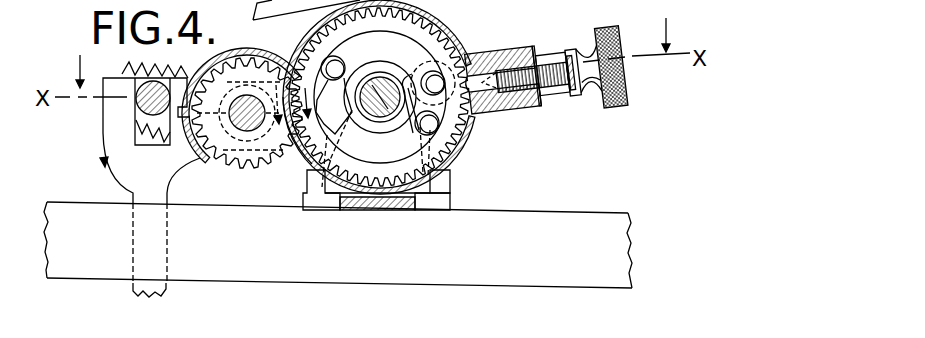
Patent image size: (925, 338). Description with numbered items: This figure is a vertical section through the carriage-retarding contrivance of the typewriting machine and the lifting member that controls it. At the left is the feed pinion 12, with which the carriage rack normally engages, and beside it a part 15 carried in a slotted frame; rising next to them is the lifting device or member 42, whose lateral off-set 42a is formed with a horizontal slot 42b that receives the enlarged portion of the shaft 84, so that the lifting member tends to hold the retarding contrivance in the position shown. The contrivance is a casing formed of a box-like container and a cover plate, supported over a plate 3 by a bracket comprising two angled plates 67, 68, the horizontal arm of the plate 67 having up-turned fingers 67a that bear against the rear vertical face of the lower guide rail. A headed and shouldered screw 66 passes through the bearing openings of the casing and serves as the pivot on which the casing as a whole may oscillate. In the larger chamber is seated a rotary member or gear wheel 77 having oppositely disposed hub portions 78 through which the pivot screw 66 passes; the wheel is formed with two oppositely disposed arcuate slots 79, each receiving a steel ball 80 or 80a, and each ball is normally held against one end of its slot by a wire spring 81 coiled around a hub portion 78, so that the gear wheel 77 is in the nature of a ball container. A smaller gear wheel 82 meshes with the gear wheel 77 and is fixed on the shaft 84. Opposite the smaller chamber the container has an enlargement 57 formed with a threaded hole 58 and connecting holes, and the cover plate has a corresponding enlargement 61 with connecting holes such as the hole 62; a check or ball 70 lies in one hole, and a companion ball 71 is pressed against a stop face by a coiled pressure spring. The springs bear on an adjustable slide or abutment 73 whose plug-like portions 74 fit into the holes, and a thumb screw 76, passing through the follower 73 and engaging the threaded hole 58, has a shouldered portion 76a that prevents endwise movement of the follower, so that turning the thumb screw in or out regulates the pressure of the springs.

The base plate 3 is at (72, 207).
The feed pinion 12 is at (133, 63).
The shaft 15 is at (134, 107).
The lifting device 42 is at (167, 291).
The lateral off-set 42a is at (228, 83).
The horizontal slot 42b is at (270, 97).
The enlargement 57 is at (523, 99).
The threaded hole 58 is at (522, 69).
The enlargement 61 is at (532, 46).
The connecting hole 62 is at (388, 10).
The headed and shouldered screw 66 is at (358, 107).
The angled plate 67 is at (346, 212).
The up-turned fingers 67a is at (450, 187).
The angled plate 68 is at (423, 195).
The check or ball 70 is at (428, 76).
The companion ball 71 is at (488, 78).
The adjustable slide or abutment 73 is at (567, 51).
The plug-like portions 74 is at (542, 56).
The thumb screw 76 is at (627, 92).
The shouldered portion 76a is at (577, 98).
The gear wheel 77 is at (373, 210).
The hub portions 78 is at (378, 76).
The arcuate slots 79 is at (420, 36).
The steel ball 80 is at (468, 125).
The steel ball 80a is at (300, 151).
The wire spring 81 is at (340, 66).
The smaller gear wheel 82 is at (247, 152).
The shaft 84 is at (238, 127).